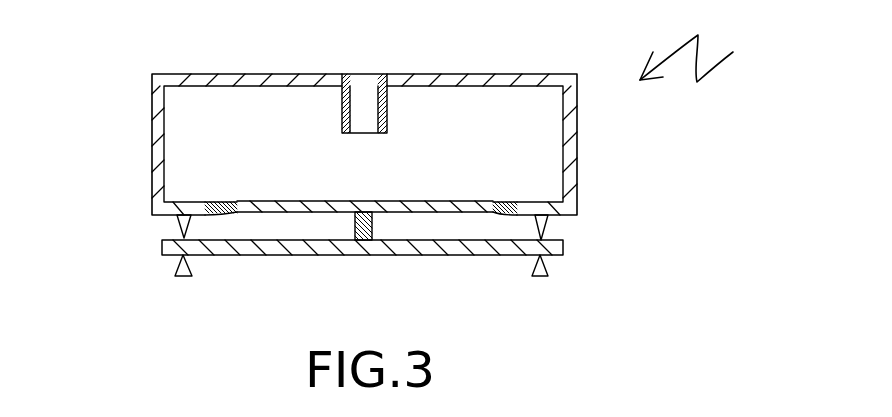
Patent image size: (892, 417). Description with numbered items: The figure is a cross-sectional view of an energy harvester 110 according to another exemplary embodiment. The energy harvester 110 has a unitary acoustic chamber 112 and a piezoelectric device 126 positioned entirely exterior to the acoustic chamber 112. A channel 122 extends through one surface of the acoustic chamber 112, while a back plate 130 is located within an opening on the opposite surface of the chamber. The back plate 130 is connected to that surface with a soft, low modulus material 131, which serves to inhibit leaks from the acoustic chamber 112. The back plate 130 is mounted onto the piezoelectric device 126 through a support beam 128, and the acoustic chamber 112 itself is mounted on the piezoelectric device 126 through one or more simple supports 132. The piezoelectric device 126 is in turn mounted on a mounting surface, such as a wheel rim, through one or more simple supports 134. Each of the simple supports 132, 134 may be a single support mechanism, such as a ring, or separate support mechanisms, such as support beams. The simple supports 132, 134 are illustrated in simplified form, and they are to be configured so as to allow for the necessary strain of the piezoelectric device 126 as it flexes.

The energy harvester 110 is at (709, 55).
The acoustic chamber 112 is at (448, 123).
The channel 122 is at (365, 73).
The piezoelectric device 126 is at (302, 246).
The support beam 128 is at (378, 224).
The back plate 130 is at (380, 205).
The soft, low modulus material 131 is at (512, 201).
The simple supports 132 is at (186, 222).
The simple supports 134 is at (176, 265).